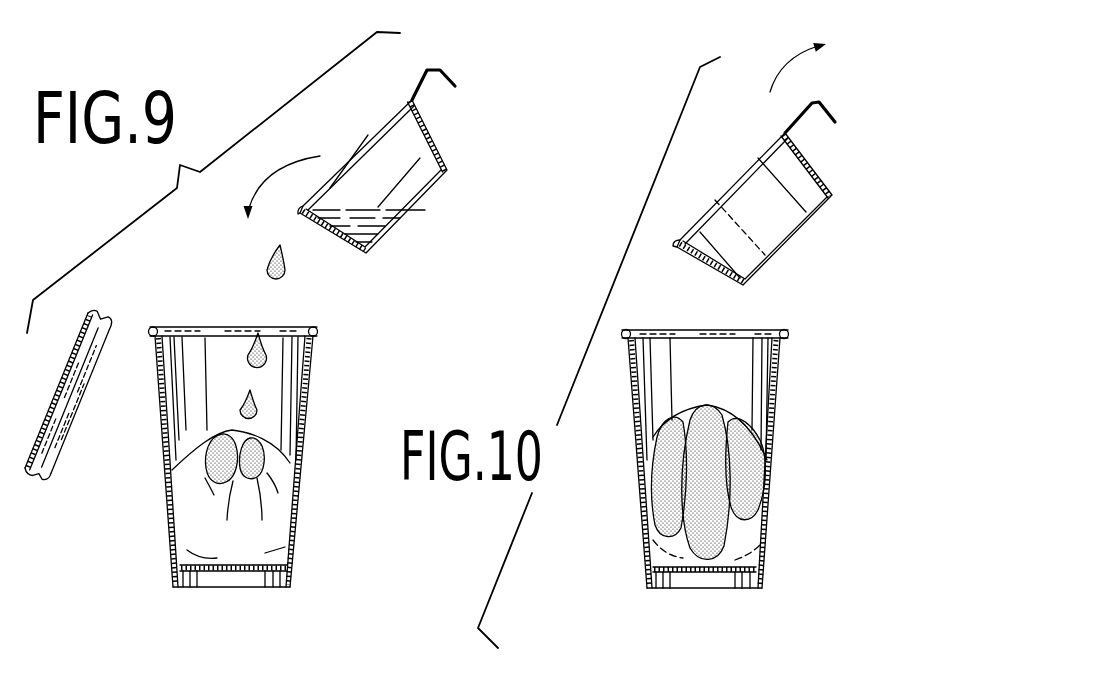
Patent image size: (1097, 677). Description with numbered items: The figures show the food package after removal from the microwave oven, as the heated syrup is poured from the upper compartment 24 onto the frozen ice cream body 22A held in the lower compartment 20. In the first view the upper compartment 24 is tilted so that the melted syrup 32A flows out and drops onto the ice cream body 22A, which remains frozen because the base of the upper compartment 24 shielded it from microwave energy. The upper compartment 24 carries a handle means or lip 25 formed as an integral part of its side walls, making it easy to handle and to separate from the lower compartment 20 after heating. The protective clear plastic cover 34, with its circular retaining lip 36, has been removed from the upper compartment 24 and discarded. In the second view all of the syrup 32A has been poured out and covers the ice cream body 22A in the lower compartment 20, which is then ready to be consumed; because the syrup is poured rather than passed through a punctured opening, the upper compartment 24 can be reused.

In FIG. 9, the lower compartment 20 is at (272, 551).
In FIG. 10, the lower compartment 20 is at (657, 543).
In FIG. 9, the ice cream body 22A is at (213, 507).
In FIG. 10, the ice cream body 22A is at (753, 500).
In FIG. 9, the upper compartment 24 is at (432, 205).
In FIG. 10, the upper compartment 24 is at (801, 243).
In FIG. 9, the hook tab 25 is at (453, 75).
In FIG. 10, the hook tab 25 is at (828, 110).
In FIG. 9, the syrup 32A is at (377, 207).
In FIG. 9, the clear plastic cover 34 is at (52, 400).
In FIG. 9, the circular retaining lip 36 is at (36, 480).